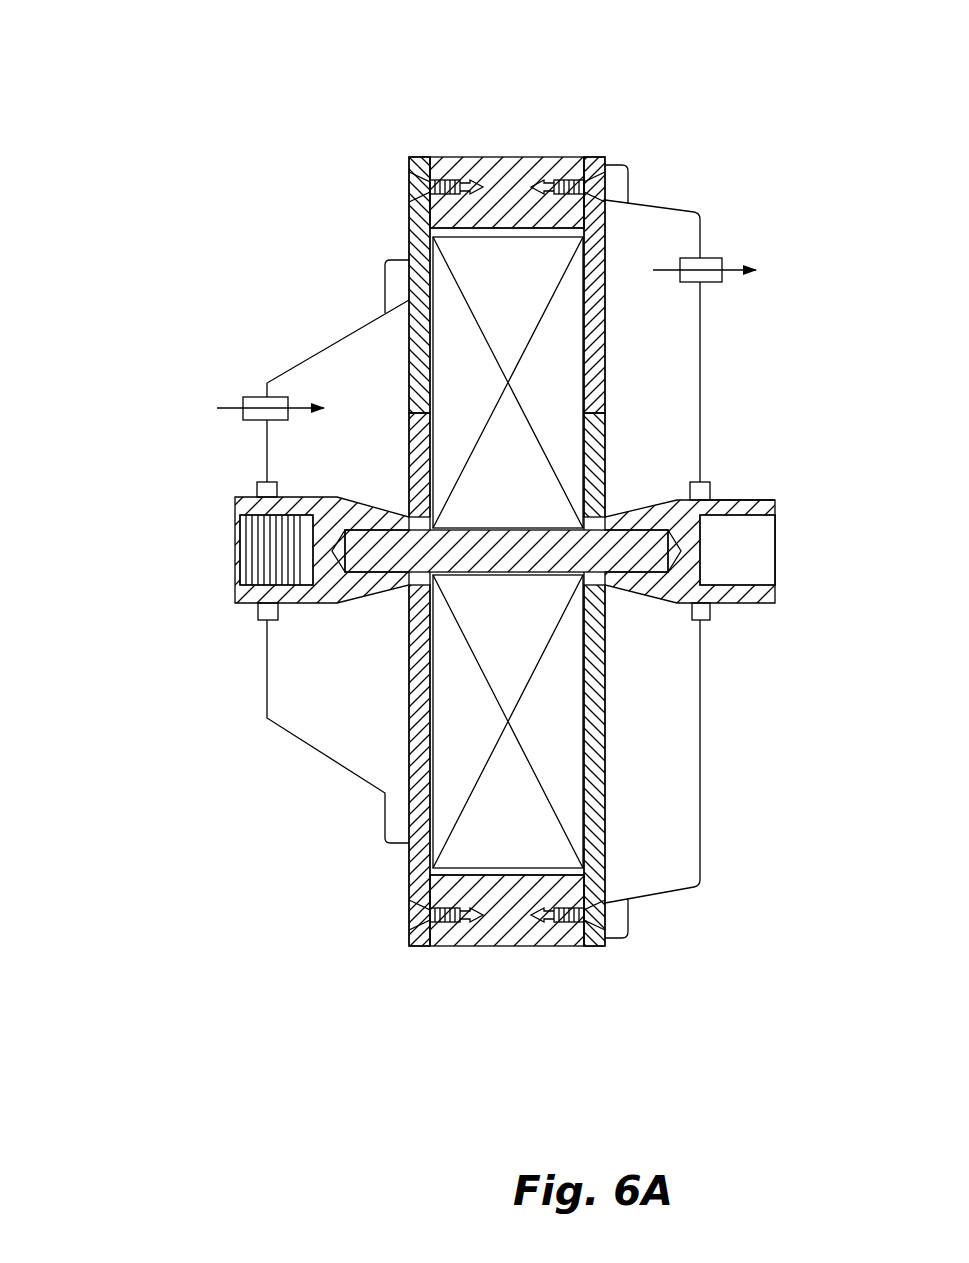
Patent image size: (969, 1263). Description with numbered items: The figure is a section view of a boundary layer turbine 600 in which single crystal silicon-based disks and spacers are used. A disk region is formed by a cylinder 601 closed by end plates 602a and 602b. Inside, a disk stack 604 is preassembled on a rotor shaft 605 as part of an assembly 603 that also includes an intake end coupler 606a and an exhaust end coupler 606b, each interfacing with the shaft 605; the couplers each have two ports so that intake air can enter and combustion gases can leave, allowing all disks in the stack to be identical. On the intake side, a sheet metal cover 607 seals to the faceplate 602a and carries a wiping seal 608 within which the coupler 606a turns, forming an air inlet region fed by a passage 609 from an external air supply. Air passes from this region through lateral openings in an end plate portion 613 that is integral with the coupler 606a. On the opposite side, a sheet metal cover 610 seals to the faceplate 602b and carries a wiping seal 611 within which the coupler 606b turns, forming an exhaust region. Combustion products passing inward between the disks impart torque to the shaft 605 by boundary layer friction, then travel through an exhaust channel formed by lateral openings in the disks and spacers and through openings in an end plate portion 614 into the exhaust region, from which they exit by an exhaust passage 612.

The boundary layer turbine 600 is at (256, 100).
The cylinder 601 is at (532, 155).
The end plate 602a is at (419, 155).
The end plate 602b is at (600, 155).
The assembly 603 is at (735, 496).
The disk stack 604 is at (468, 695).
The rotor shaft 605 is at (530, 585).
The intake end coupler 606a is at (247, 495).
The exhaust end coupler 606b is at (770, 497).
The sheet metal cover 607 is at (308, 352).
The wiping seal 608 is at (255, 605).
The passage 609 is at (253, 395).
The sheet metal cover 610 is at (682, 200).
The wiping seal 611 is at (712, 610).
The exhaust passage 612 is at (712, 257).
The end plate portion 613 is at (408, 460).
The end plate portion 614 is at (605, 450).